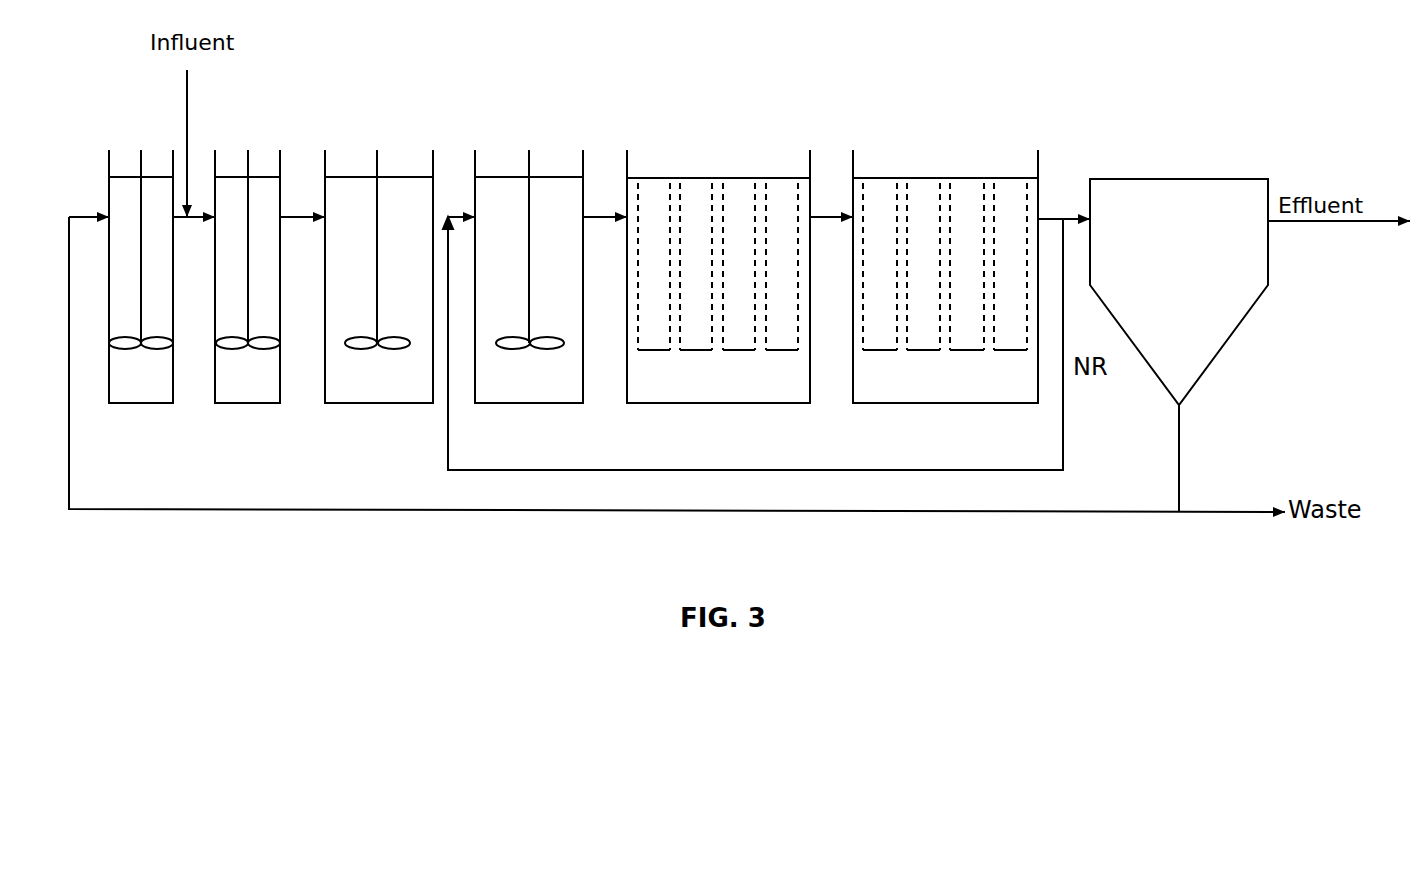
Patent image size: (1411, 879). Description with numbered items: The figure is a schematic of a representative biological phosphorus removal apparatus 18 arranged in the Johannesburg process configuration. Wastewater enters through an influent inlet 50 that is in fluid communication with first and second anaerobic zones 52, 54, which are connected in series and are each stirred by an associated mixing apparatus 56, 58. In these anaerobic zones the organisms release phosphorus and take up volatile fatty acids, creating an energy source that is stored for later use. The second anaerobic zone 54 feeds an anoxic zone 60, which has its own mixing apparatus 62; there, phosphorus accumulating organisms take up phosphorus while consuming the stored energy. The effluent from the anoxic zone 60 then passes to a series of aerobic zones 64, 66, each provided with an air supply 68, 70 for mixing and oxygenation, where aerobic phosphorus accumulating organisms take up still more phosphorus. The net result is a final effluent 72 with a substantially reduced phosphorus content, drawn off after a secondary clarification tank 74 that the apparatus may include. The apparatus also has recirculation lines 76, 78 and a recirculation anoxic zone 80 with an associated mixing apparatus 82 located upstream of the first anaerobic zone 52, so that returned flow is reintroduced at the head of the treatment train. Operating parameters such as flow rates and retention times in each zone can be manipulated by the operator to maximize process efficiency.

The BPR apparatus 18 is at (1144, 78).
The influent inlet 50 is at (187, 98).
The first anaerobic zone 52 is at (248, 403).
The second anaerobic zone 54 is at (377, 403).
The mixing apparatus 56 is at (232, 337).
The mixing apparatus 58 is at (362, 337).
The anoxic zone 60 is at (529, 403).
The mixing apparatus 62 is at (514, 337).
The first aerobic zone 64 is at (717, 403).
The second aerobic zone 66 is at (945, 403).
The air supply 68 is at (774, 350).
The air supply 70 is at (998, 350).
The final effluent 72 is at (1339, 207).
The secondary clarification tank 74 is at (1179, 292).
The recirculation line 76 is at (1077, 512).
The recirculation line 78 is at (1023, 470).
The recirculation anoxic zone 80 is at (141, 403).
The mixing apparatus 82 is at (124, 337).